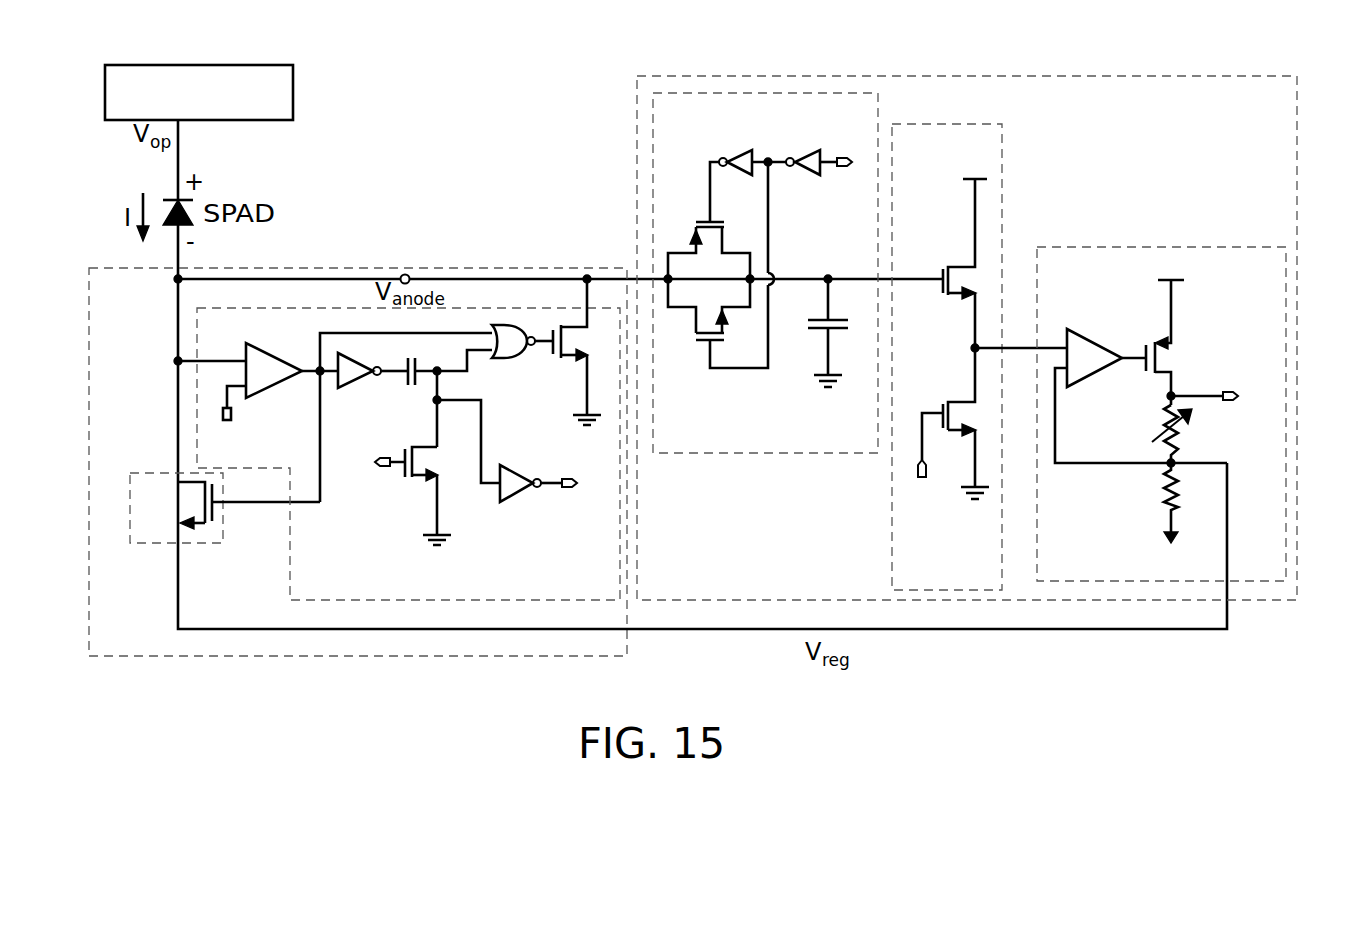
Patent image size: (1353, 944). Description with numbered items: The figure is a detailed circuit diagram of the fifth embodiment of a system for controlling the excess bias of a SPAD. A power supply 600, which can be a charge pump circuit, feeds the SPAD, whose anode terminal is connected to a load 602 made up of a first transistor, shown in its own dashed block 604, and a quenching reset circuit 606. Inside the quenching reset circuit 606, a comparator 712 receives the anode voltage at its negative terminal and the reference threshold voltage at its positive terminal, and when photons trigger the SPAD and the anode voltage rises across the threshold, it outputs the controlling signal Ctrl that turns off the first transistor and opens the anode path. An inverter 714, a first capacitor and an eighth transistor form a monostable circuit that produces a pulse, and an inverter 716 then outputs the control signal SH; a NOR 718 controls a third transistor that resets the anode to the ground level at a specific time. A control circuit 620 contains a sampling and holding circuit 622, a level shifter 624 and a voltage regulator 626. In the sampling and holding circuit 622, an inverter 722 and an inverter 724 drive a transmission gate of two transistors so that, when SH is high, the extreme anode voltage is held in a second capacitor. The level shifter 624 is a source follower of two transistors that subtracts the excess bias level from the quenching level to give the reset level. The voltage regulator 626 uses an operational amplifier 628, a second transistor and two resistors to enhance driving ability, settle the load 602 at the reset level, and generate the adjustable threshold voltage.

The power supply 600 is at (294, 90).
The load 602 is at (410, 657).
The quenching transistor circuit 604 is at (152, 544).
The quenching reset circuit 606 is at (290, 580).
The comparator 712 is at (252, 343).
The inverter 714 is at (350, 390).
The inverter 716 is at (510, 503).
The NOR 718 is at (512, 360).
The control circuit 620 is at (1266, 116).
The sampling and holding circuit 622 is at (738, 455).
The inverter 722 is at (742, 148).
The inverter 724 is at (810, 148).
The level shifter 624 is at (892, 532).
The voltage regulator 626 is at (1195, 414).
The operational amplifier 628 is at (1072, 332).